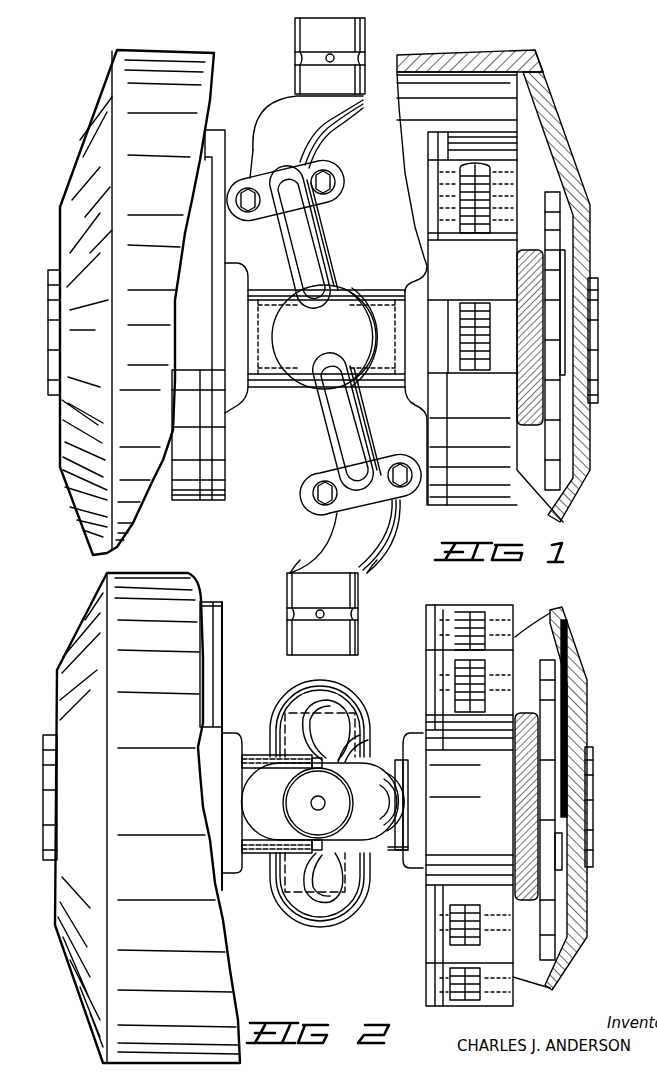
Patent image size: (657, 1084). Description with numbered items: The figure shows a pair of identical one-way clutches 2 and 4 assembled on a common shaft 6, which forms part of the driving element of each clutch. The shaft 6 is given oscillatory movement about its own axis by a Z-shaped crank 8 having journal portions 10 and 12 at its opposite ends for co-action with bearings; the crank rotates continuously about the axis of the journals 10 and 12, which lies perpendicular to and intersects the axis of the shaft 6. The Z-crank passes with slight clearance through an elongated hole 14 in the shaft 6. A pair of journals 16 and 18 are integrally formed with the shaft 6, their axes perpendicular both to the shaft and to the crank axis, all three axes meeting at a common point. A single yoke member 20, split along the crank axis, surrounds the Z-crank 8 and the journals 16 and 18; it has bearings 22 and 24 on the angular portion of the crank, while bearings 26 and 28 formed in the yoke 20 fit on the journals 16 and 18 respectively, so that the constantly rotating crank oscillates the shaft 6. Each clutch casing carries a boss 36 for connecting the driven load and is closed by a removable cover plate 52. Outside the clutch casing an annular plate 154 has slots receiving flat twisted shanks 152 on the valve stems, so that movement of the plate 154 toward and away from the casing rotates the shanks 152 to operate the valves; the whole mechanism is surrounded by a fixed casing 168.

In FIG. 1, the one-way clutch 2 is at (510, 500).
In FIG. 2, the one-way clutch 2 is at (507, 617).
In FIG. 1, the one-way clutch 4 is at (225, 500).
In FIG. 2, the one-way clutch 4 is at (213, 615).
In FIG. 1, the shaft 6 is at (300, 240).
In FIG. 2, the shaft 6 is at (250, 763).
In FIG. 1, the Z-shaped crank 8 is at (317, 128).
In FIG. 1, the journal portion 10 is at (363, 39).
In FIG. 1, the journal portion 12 is at (362, 636).
In FIG. 2, the elongated hole 14 is at (243, 820).
In FIG. 2, the journal 16 is at (280, 717).
In FIG. 2, the journal 18 is at (272, 880).
In FIG. 1, the yoke member 20 is at (320, 243).
In FIG. 2, the yoke member 20 is at (370, 733).
In FIG. 1, the bearing 22 is at (310, 207).
In FIG. 1, the bearing 24 is at (320, 482).
In FIG. 2, the bearing 24 is at (383, 845).
In FIG. 1, the bearing 26 is at (345, 292).
In FIG. 2, the bearing 26 is at (343, 693).
In FIG. 2, the bearing 28 is at (353, 913).
In FIG. 1, the boss 36 is at (600, 278).
In FIG. 2, the boss 36 is at (593, 748).
In FIG. 1, the cover plate 52 is at (222, 463).
In FIG. 2, the cover plate 52 is at (213, 647).
In FIG. 2, the flat twisted shank 152 is at (522, 694).
In FIG. 1, the annular plate 154 is at (553, 455).
In FIG. 2, the annular plate 154 is at (545, 910).
In FIG. 1, the casing 168 is at (580, 195).
In FIG. 2, the casing 168 is at (577, 947).